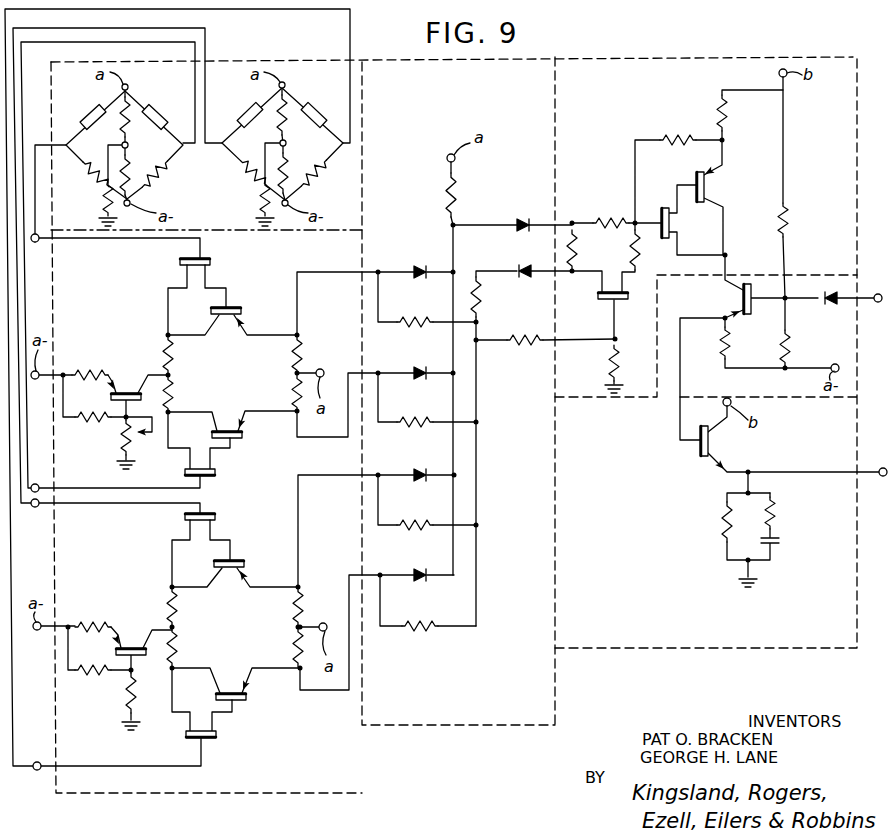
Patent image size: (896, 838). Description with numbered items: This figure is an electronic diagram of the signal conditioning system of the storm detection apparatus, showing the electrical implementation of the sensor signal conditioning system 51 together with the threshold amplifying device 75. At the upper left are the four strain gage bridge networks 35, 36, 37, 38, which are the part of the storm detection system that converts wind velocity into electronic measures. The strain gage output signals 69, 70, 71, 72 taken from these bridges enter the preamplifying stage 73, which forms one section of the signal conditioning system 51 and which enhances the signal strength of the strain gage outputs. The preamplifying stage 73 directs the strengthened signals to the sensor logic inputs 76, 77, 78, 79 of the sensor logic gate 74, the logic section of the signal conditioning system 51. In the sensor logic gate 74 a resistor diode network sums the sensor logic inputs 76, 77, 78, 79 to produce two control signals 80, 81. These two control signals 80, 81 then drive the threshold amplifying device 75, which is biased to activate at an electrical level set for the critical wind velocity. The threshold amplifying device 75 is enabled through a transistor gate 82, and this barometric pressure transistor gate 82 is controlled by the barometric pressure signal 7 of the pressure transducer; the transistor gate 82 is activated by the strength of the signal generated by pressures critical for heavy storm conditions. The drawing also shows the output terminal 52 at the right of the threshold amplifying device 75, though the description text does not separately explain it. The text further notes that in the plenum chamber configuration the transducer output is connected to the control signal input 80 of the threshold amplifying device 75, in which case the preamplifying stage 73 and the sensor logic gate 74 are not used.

The strain gage bridge network 35 is at (86, 109).
The strain gage bridge network 36 is at (243, 114).
The strain gage bridge network 37 is at (158, 110).
The strain gage bridge network 38 is at (316, 112).
The sensor signal conditioning system 51 is at (362, 62).
The strain gage output signal 69 is at (37, 243).
The strain gage output signal 70 is at (40, 508).
The strain gage output signal 71 is at (37, 484).
The strain gage output signal 72 is at (39, 762).
The preamplifying stage 73 is at (300, 796).
The sensor logic gate 74 is at (548, 728).
The threshold amplifying device 75 is at (783, 648).
The sensor logic input 76 is at (296, 277).
The sensor logic input 77 is at (348, 374).
The sensor logic input 78 is at (348, 478).
The sensor logic input 79 is at (350, 575).
The control signal 80 is at (542, 222).
The control signal 81 is at (545, 344).
The transistor gate 82 is at (802, 272).
The output terminal 52 is at (883, 468).
The barometric pressure signal 7 is at (878, 294).